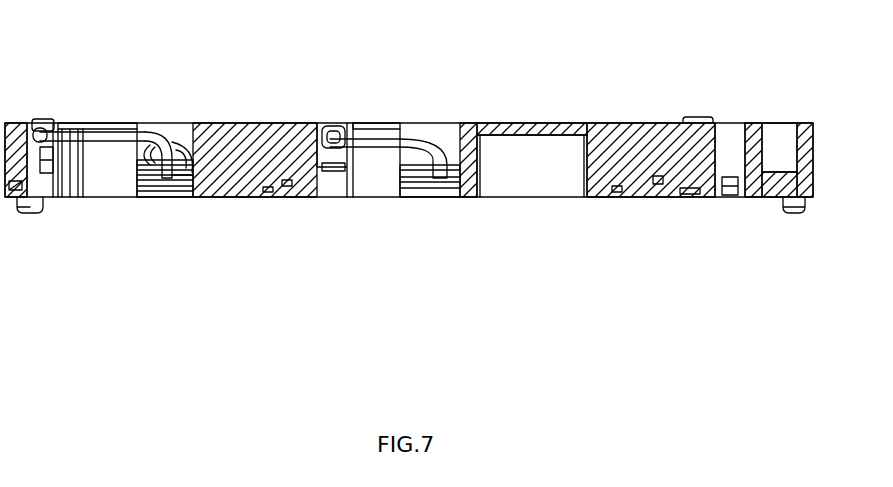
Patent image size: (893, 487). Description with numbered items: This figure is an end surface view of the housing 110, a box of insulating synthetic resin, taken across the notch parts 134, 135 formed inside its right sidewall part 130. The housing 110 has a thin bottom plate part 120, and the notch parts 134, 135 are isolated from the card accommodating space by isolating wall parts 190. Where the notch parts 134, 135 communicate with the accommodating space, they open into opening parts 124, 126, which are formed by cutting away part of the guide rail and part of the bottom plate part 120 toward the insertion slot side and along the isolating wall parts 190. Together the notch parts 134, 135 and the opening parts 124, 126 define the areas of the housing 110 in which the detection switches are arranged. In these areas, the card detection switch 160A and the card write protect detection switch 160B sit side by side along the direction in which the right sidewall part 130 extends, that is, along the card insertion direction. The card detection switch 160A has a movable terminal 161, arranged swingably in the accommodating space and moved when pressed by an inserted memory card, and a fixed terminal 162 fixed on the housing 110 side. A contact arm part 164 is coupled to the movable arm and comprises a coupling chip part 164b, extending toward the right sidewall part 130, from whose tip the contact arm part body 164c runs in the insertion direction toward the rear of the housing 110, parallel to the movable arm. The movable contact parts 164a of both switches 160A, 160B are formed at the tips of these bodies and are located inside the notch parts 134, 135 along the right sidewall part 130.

The housing 110 is at (828, 127).
The bottom plate part 120 is at (170, 187).
The opening part 124 is at (143, 168).
The opening part 126 is at (455, 121).
The right sidewall part 130 is at (588, 121).
The notch part 134 is at (107, 178).
The notch part 135 is at (388, 170).
The card detection switch 160A is at (166, 128).
The card write protect detection switch 160B is at (423, 128).
The movable terminal 161 is at (377, 143).
The fixed terminal 162 is at (43, 173).
The contact arm part 164 is at (75, 125).
The movable contact part 164a is at (38, 118).
The coupling chip part 164b is at (192, 122).
The contact arm part body 164c is at (90, 141).
The isolating wall part 190 is at (112, 120).